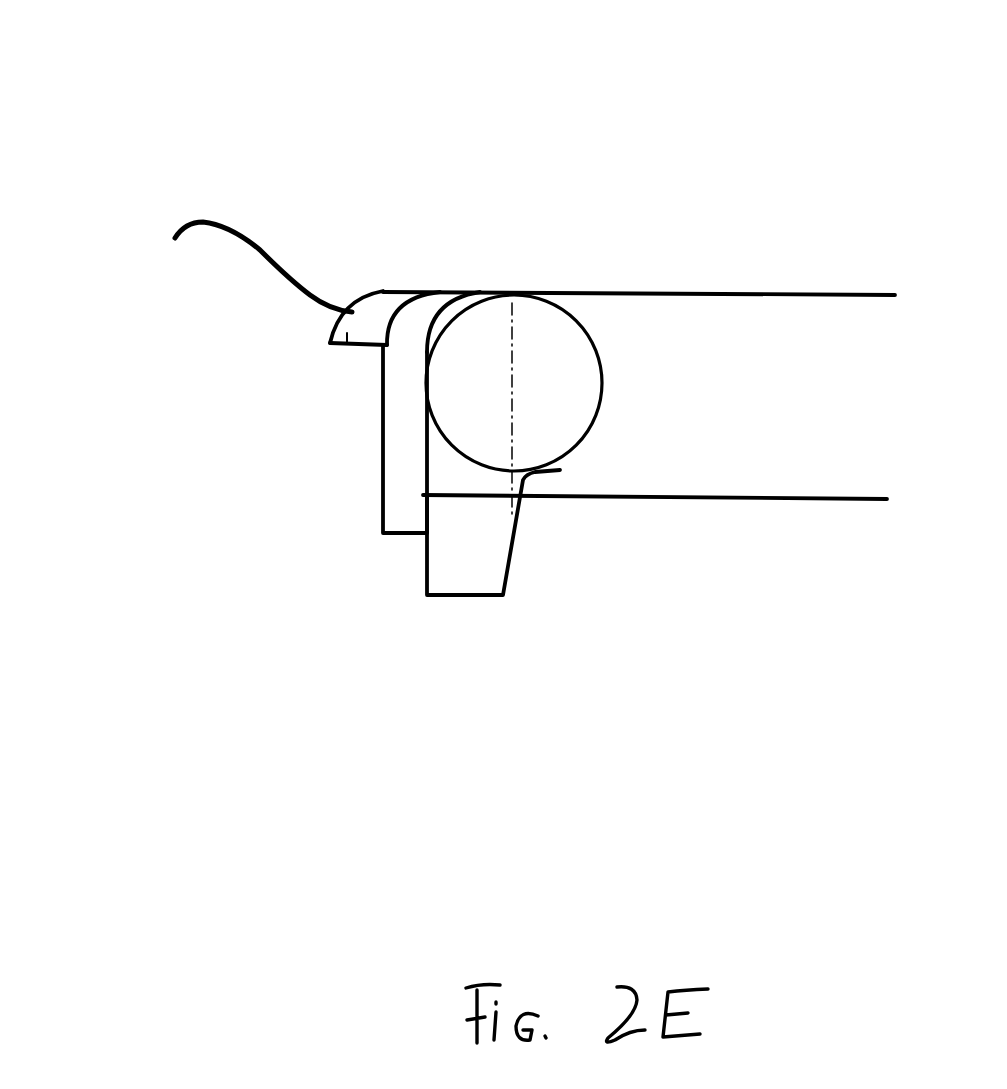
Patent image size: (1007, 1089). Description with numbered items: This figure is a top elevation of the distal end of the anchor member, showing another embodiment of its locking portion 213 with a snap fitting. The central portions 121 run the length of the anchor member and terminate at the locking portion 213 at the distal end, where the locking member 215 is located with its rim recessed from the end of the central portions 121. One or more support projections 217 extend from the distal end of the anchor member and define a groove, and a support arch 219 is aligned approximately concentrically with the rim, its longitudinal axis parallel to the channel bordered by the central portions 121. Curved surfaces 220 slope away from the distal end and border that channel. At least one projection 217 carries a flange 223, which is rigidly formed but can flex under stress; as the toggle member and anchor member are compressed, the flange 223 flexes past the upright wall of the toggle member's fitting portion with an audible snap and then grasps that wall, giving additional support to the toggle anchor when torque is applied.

The central portions 121 is at (785, 577).
The locking portion 213 is at (443, 152).
The locking member 215 is at (430, 422).
The support projections 217 is at (383, 432).
The support arch 219 is at (422, 687).
The curved surfaces 220 is at (603, 400).
The flange 223 is at (205, 267).